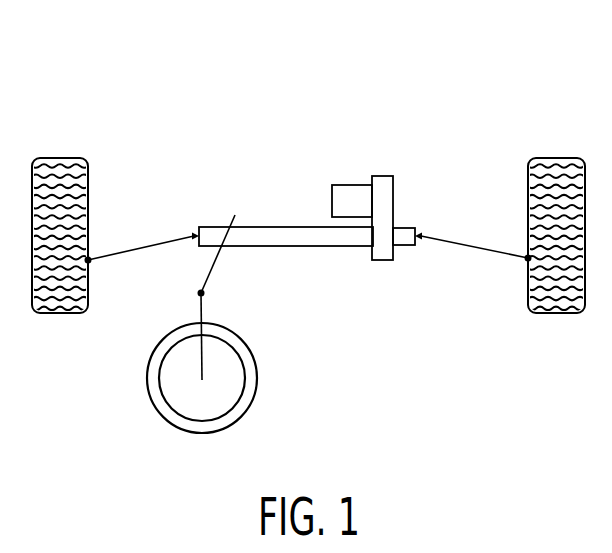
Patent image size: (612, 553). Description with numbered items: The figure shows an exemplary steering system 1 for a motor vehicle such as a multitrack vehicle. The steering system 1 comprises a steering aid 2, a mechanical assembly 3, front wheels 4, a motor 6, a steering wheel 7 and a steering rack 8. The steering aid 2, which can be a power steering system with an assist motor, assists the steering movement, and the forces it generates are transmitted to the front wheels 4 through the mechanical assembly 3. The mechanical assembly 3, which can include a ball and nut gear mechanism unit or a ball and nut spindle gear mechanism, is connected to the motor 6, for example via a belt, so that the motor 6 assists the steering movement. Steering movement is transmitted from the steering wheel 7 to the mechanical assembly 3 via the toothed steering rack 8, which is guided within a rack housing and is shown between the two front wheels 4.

The steering system 1 is at (436, 97).
The steering aid 2 is at (348, 177).
The mechanical assembly 3 is at (385, 250).
The front wheels 4 is at (60, 305).
The motor 6 is at (352, 192).
The steering wheel 7 is at (202, 433).
The steering rack 8 is at (307, 240).